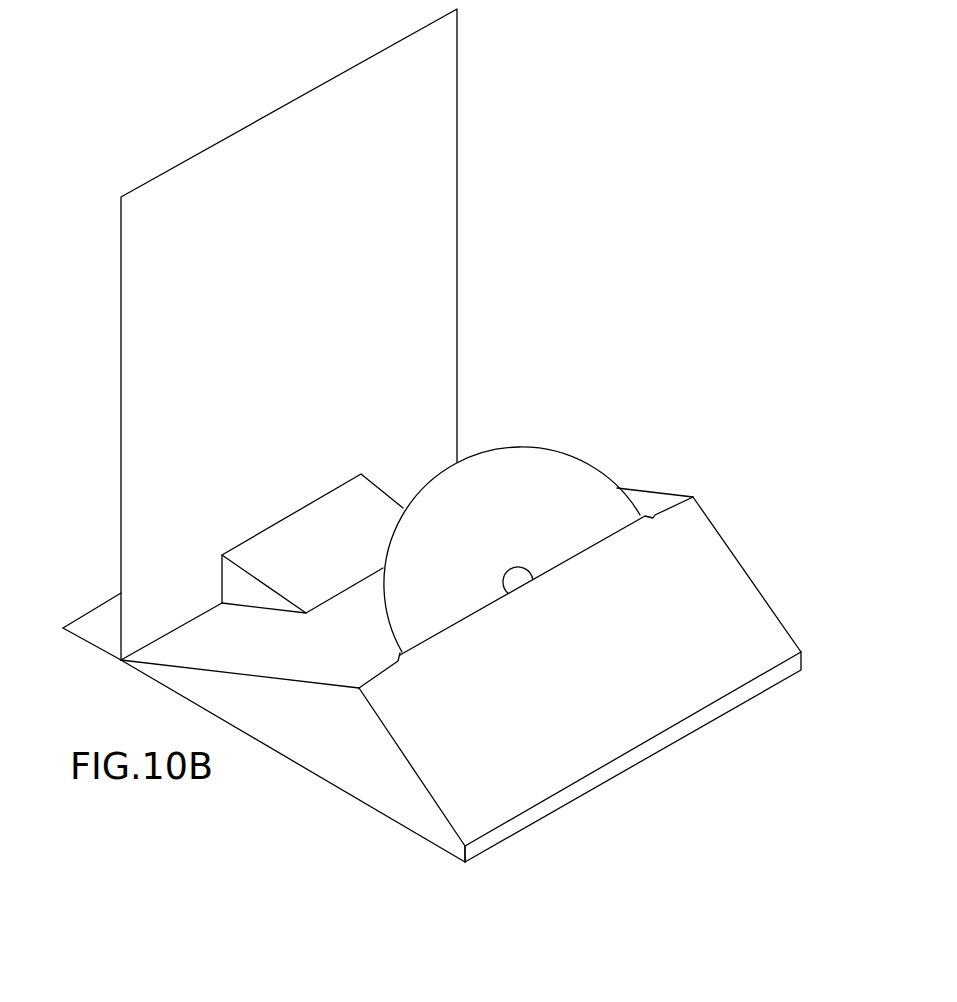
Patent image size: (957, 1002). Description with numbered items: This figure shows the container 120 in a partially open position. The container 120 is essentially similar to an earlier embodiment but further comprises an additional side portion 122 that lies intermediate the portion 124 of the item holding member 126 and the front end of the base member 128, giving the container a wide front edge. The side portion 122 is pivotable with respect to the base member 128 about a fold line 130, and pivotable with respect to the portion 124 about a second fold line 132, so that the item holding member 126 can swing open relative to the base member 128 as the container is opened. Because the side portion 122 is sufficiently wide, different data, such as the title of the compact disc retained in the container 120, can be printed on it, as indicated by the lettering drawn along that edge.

The container 120 is at (153, 113).
The side portion 122 is at (731, 706).
The portion 124 is at (557, 691).
The item holding member 126 is at (652, 493).
The base member 128 is at (240, 733).
The fold line 130 is at (582, 798).
The fold line 132 is at (515, 815).